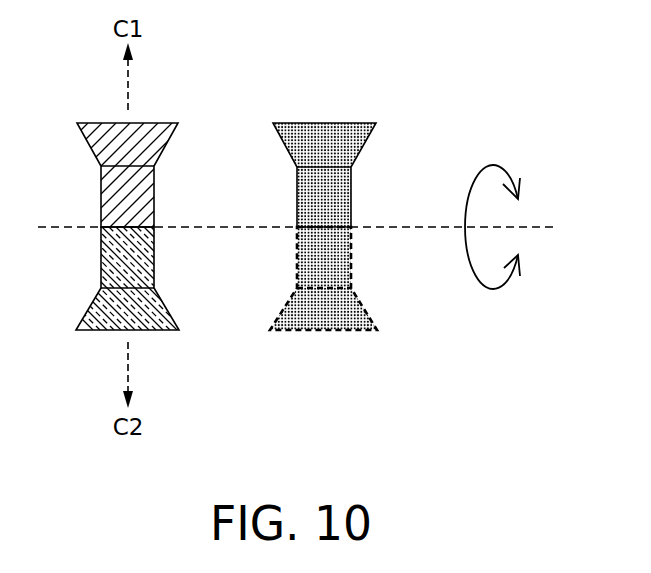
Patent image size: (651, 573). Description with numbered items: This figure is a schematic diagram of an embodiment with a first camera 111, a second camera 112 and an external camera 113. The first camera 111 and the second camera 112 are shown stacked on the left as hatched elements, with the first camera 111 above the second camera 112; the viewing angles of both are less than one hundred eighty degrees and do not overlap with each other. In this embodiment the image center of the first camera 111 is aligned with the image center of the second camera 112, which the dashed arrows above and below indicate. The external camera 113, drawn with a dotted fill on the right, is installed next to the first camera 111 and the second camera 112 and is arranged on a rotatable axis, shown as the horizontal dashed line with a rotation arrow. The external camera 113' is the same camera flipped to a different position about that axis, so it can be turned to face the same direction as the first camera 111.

The first camera 111 is at (112, 200).
The second camera 112 is at (112, 255).
The external camera 113 is at (345, 175).
The external camera 113' is at (346, 278).